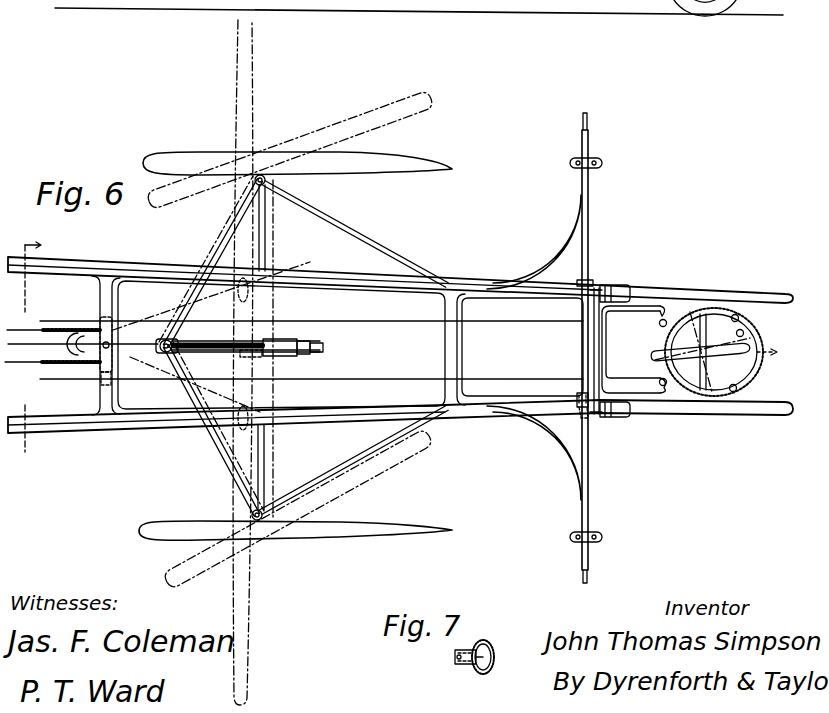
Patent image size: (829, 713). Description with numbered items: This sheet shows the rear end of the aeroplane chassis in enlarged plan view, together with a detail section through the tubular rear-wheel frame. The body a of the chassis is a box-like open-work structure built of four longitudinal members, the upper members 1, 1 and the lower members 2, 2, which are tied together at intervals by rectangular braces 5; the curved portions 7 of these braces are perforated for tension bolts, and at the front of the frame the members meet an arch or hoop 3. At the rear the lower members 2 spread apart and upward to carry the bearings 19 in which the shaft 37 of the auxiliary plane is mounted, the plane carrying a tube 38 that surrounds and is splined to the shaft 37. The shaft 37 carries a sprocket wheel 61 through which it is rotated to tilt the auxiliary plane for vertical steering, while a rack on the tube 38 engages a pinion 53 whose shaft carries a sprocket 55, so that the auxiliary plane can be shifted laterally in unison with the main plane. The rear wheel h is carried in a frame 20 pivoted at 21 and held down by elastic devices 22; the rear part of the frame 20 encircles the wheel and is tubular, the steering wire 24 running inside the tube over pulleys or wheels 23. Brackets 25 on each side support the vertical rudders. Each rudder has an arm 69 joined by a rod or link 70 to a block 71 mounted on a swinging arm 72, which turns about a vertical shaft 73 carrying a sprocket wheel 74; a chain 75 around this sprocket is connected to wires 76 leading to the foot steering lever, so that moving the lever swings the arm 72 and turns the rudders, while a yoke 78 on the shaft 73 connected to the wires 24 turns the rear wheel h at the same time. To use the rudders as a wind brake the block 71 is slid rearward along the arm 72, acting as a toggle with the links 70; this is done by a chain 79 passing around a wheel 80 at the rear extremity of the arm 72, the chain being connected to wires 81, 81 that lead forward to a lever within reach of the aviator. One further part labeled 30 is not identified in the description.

In FIG. 6, the upper longitudinal members 1 is at (358, 279).
In FIG. 6, the lower longitudinal members 2 is at (558, 261).
In FIG. 6, the arch or hoop 3 is at (28, 349).
In FIG. 6, the rectangular braces 5 is at (100, 292).
In FIG. 6, the curved portions 7 is at (774, 352).
In FIG. 6, the bearings 19 is at (572, 164).
In FIG. 6, the frame 20 is at (660, 306).
In FIG. 7, the frame 20 is at (480, 645).
In FIG. 6, the pivot 21 is at (600, 287).
In FIG. 6, the elastic devices 22 is at (624, 287).
In FIG. 6, the pulleys or wheels 23 is at (743, 320).
In FIG. 7, the pulleys or wheels 23 is at (457, 668).
In FIG. 6, the wire 24 is at (524, 328).
In FIG. 7, the wire 24 is at (478, 661).
In FIG. 6, the frame or bracket 25 is at (267, 246).
In FIG. 6, the threaded rod 30 is at (323, 349).
In FIG. 6, the shaft 37 is at (582, 348).
In FIG. 6, the tube 38 is at (589, 142).
In FIG. 6, the pinion 53 is at (591, 414).
In FIG. 6, the sprocket 55 is at (578, 399).
In FIG. 6, the sprocket wheel 61 is at (590, 284).
In FIG. 6, the arm 69 is at (296, 190).
In FIG. 6, the rod or link 70 is at (200, 288).
In FIG. 6, the block 71 is at (168, 356).
In FIG. 6, the swinging arm 72 is at (250, 356).
In FIG. 6, the shaft 73 is at (62, 368).
In FIG. 6, the sprocket wheel 74 is at (100, 342).
In FIG. 6, the chain 75 is at (58, 330).
In FIG. 6, the wires 76 is at (22, 326).
In FIG. 6, the yoke 78 is at (107, 371).
In FIG. 6, the chain 79 is at (294, 343).
In FIG. 6, the wheel 80 is at (316, 347).
In FIG. 6, the wires 81 is at (164, 338).
In FIG. 6, the body a is at (399, 530).
In FIG. 6, the rear wheel h is at (668, 352).